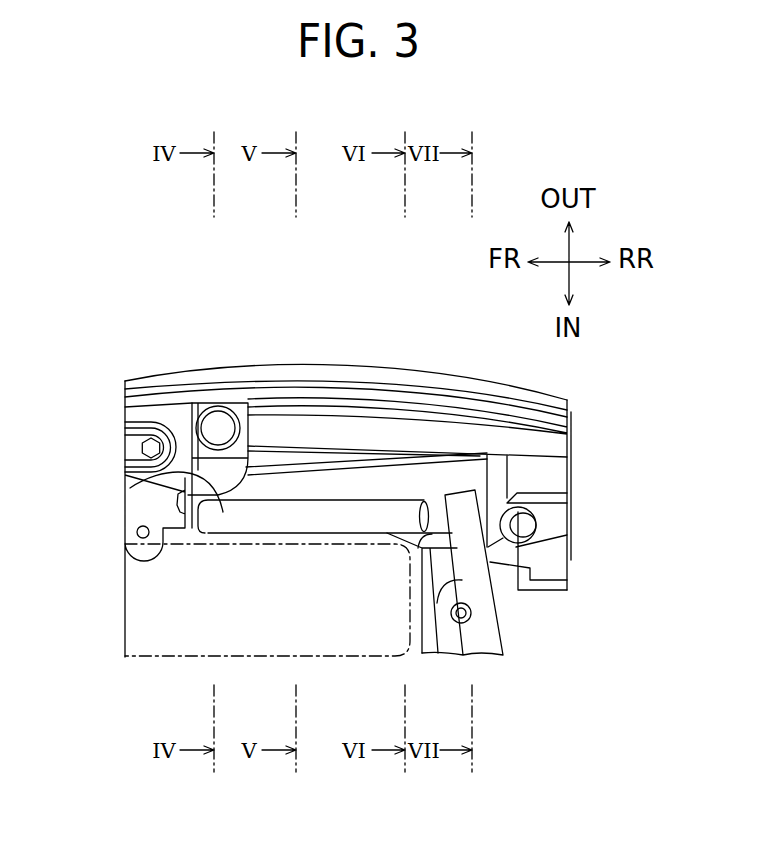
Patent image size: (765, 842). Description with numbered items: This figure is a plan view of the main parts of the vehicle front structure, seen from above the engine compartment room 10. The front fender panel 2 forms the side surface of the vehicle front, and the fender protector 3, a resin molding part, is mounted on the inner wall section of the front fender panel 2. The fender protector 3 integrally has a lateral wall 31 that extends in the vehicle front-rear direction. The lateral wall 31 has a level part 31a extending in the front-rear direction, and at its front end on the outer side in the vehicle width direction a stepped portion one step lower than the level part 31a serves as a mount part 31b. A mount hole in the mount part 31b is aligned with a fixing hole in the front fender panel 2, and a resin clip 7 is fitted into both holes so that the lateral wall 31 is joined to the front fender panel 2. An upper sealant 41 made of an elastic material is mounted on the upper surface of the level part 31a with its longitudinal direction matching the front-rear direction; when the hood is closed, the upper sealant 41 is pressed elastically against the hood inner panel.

The front fender panel 2 is at (272, 360).
The fender protector 3 is at (310, 418).
The resin clip 7 is at (220, 420).
The engine compartment room 10 is at (192, 623).
The lateral wall 31 is at (360, 386).
The level part 31a is at (390, 480).
The mount part 31b is at (175, 403).
The upper sealant 41 is at (150, 489).